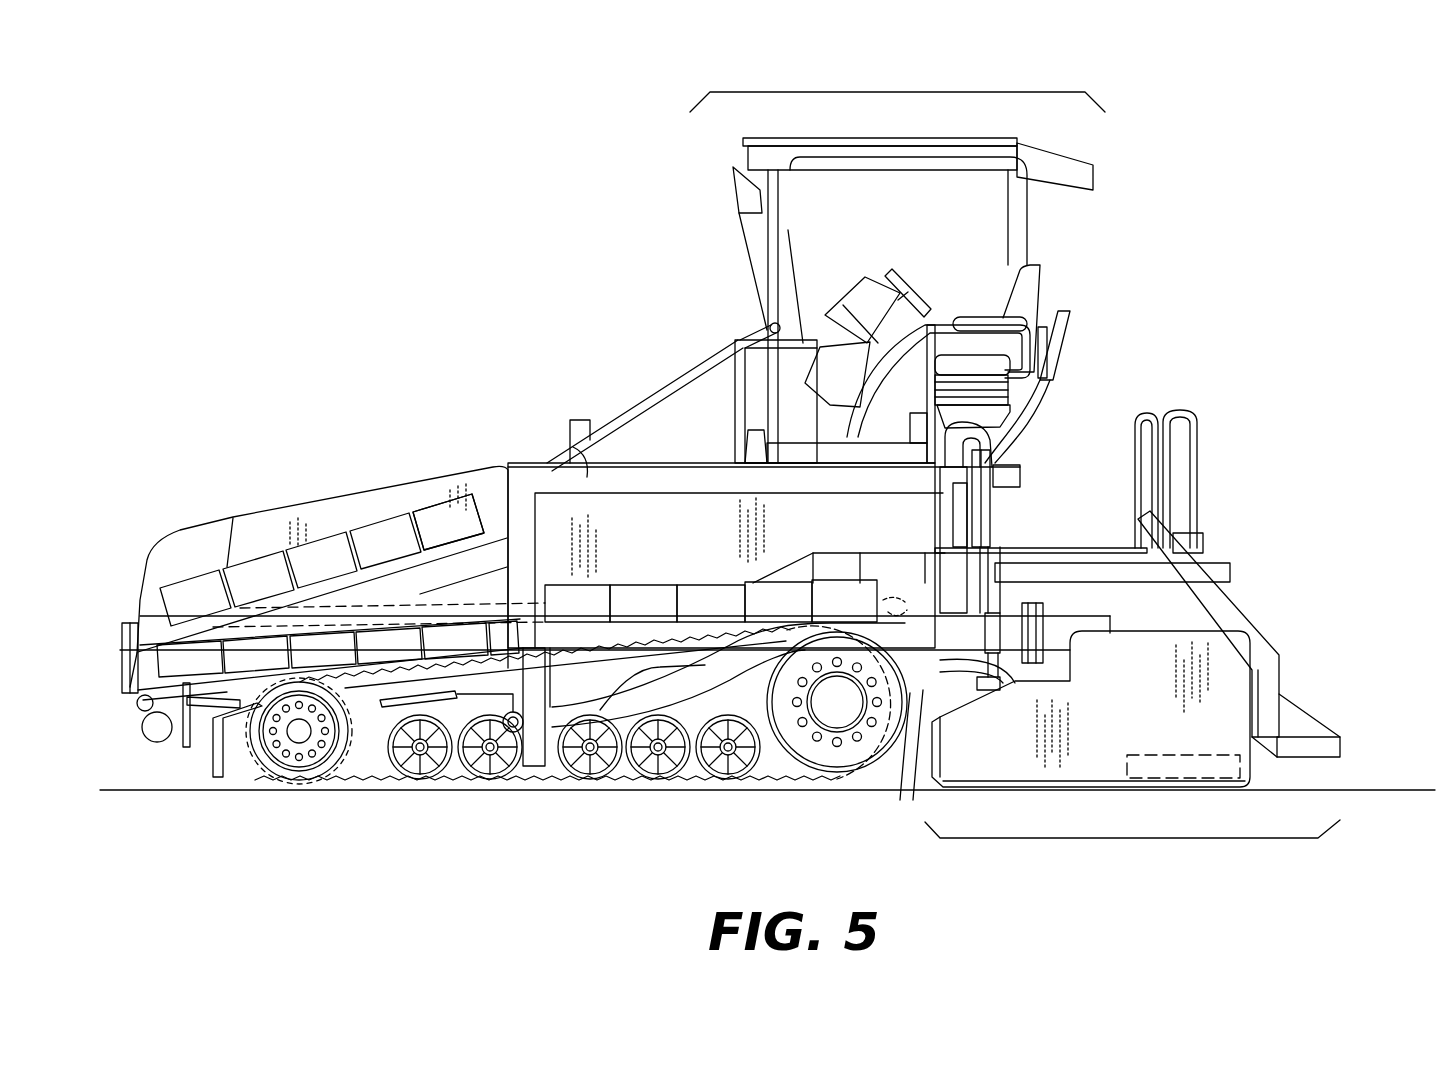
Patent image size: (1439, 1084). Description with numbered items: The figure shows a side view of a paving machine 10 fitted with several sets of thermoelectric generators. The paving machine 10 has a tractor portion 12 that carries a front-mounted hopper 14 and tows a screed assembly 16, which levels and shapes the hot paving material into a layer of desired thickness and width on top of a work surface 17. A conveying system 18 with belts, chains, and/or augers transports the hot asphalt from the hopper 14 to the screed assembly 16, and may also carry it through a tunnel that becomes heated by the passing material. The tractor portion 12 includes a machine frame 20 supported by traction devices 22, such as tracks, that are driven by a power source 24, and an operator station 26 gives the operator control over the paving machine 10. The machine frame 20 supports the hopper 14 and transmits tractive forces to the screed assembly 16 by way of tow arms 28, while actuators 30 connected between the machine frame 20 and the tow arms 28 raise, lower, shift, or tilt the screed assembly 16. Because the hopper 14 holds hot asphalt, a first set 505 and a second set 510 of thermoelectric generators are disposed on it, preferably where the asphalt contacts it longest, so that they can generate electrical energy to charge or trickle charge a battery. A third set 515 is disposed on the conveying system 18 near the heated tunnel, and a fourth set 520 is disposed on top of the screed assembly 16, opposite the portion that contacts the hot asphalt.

The paving machine 10 is at (394, 197).
The tractor portion 12 is at (882, 88).
The hopper 14 is at (333, 497).
The screed assembly 16 is at (1143, 838).
The work surface 17 is at (1381, 790).
The conveying system 18 is at (900, 800).
The machine frame 20 is at (582, 472).
The traction devices 22 is at (270, 781).
The power source 24 is at (665, 417).
The operator station 26 is at (977, 221).
The tow arms 28 is at (934, 647).
The actuators 30 is at (968, 520).
The first set 505 is at (432, 517).
The second set 510 is at (170, 663).
The third set 515 is at (717, 597).
The fourth set 520 is at (1213, 765).